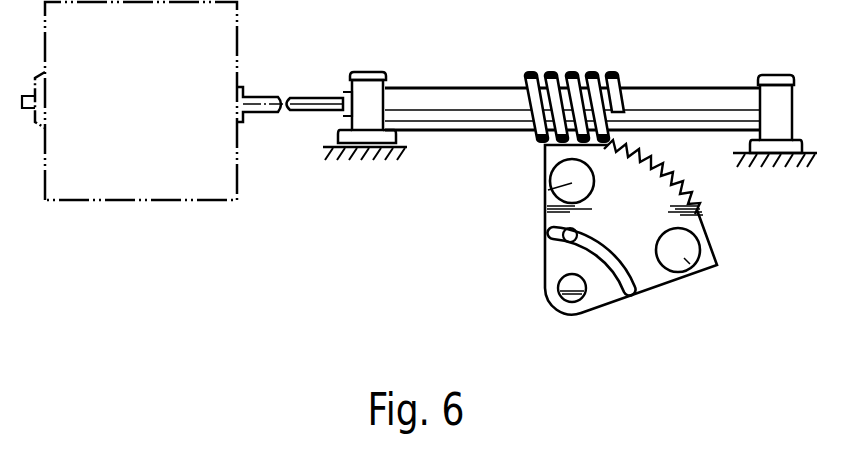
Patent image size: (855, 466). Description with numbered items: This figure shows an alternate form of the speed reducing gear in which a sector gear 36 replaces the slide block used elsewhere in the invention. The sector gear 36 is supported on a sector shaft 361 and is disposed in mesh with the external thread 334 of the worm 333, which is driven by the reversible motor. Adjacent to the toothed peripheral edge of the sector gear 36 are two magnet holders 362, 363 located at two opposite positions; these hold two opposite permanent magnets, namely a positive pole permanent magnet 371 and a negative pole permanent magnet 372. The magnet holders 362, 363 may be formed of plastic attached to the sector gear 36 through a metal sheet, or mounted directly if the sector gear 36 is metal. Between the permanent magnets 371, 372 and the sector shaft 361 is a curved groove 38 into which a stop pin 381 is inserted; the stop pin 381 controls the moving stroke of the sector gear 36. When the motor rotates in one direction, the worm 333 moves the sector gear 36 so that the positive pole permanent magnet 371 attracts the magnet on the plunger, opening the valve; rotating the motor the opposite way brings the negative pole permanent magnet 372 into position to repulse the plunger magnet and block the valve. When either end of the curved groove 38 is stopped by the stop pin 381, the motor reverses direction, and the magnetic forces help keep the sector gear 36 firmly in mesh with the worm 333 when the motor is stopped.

The sector gear 36 is at (590, 312).
The curved groove 38 is at (633, 297).
The worm 333 is at (639, 94).
The external thread 334 is at (530, 71).
The sector shaft 361 is at (562, 298).
The magnet holder 362 is at (546, 168).
The magnet holder 363 is at (712, 250).
The positive pole permanent magnet 371 is at (545, 197).
The negative pole permanent magnet 372 is at (688, 260).
The stop pin 381 is at (563, 236).